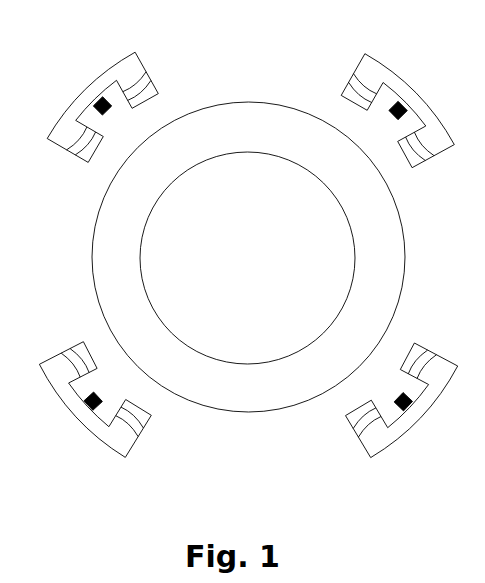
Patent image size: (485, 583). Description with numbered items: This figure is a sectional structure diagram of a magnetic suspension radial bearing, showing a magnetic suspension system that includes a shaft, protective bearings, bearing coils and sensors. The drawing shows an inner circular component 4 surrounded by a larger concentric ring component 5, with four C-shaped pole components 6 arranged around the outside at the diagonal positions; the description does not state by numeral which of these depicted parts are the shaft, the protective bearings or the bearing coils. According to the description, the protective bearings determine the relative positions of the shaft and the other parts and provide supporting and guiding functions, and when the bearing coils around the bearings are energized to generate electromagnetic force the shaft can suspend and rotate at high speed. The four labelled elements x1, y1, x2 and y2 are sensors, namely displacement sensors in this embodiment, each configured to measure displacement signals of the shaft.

The rotor shaft 4 is at (269, 138).
The rotor 5 is at (211, 90).
The electromagnet pole piece 6 is at (44, 115).
The sensor x1 is at (87, 90).
The sensor x2 is at (402, 400).
The sensor y1 is at (399, 111).
The sensor y2 is at (94, 400).